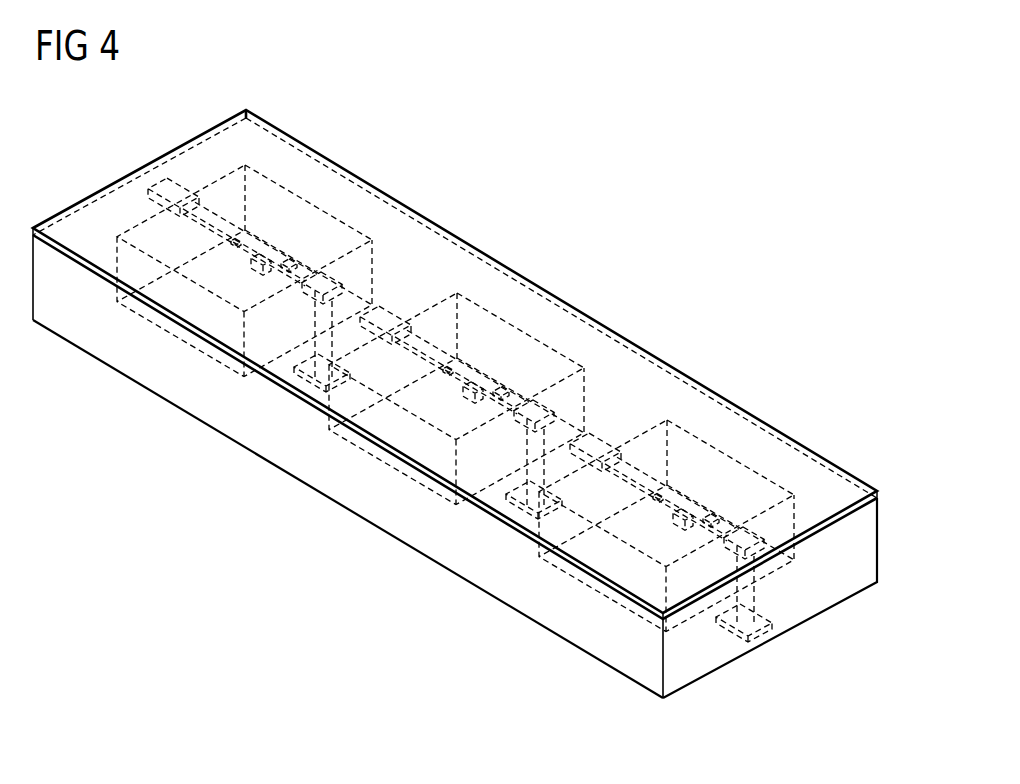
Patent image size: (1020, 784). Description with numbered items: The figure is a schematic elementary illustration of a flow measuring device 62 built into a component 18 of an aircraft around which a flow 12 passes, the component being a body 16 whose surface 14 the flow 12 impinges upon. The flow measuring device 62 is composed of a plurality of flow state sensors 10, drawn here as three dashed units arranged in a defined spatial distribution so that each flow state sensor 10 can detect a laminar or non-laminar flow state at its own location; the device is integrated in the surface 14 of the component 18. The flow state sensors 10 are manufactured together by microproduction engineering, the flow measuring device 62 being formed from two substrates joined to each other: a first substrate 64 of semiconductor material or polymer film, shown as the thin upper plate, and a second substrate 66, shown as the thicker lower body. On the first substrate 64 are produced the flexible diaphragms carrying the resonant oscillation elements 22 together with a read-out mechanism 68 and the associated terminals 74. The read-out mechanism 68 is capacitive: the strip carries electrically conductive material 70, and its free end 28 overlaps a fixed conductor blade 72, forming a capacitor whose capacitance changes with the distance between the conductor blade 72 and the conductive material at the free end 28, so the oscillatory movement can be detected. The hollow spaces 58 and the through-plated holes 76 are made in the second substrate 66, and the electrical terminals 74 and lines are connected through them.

The flow state sensor 10 is at (322, 186).
The flow 12 is at (114, 153).
The surface 14 is at (490, 277).
The body 16 is at (312, 493).
The component 18 is at (692, 708).
The resonant oscillation element 22 is at (427, 355).
The free end 28 is at (462, 359).
The hollow space 58 is at (690, 447).
The flow measuring device 62 is at (716, 224).
The first substrate 64 is at (430, 218).
The second substrate 66 is at (170, 390).
The read-out mechanism 68 is at (460, 413).
The electrically conductive material 70 is at (493, 403).
The conductor blade 72 is at (503, 389).
The terminal 74 is at (537, 407).
The through-plated hole 76 is at (747, 620).